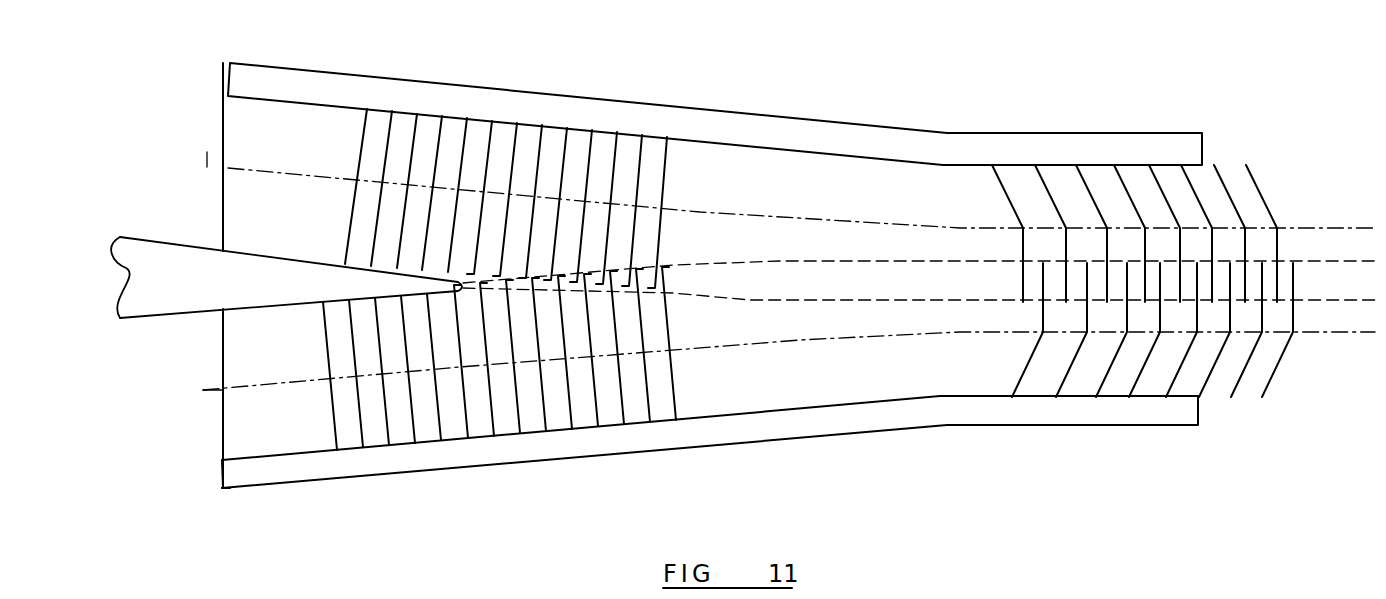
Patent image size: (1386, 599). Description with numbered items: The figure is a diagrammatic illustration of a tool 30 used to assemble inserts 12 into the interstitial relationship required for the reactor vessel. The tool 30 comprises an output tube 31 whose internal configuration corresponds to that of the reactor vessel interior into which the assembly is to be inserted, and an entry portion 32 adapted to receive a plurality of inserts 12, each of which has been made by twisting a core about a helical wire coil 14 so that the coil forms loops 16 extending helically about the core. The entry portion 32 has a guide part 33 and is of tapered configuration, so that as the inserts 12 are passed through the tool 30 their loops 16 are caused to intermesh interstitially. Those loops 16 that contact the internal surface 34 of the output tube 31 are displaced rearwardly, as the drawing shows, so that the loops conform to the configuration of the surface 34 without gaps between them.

The insert 12 is at (206, 150).
The helical wire coil 14 is at (317, 177).
The loop 16 is at (372, 112).
The tool 30 is at (872, 426).
The output tube 31 is at (1182, 385).
The entry portion 32 is at (233, 465).
The guide part 33 is at (152, 300).
The internal surface 34 is at (1115, 390).